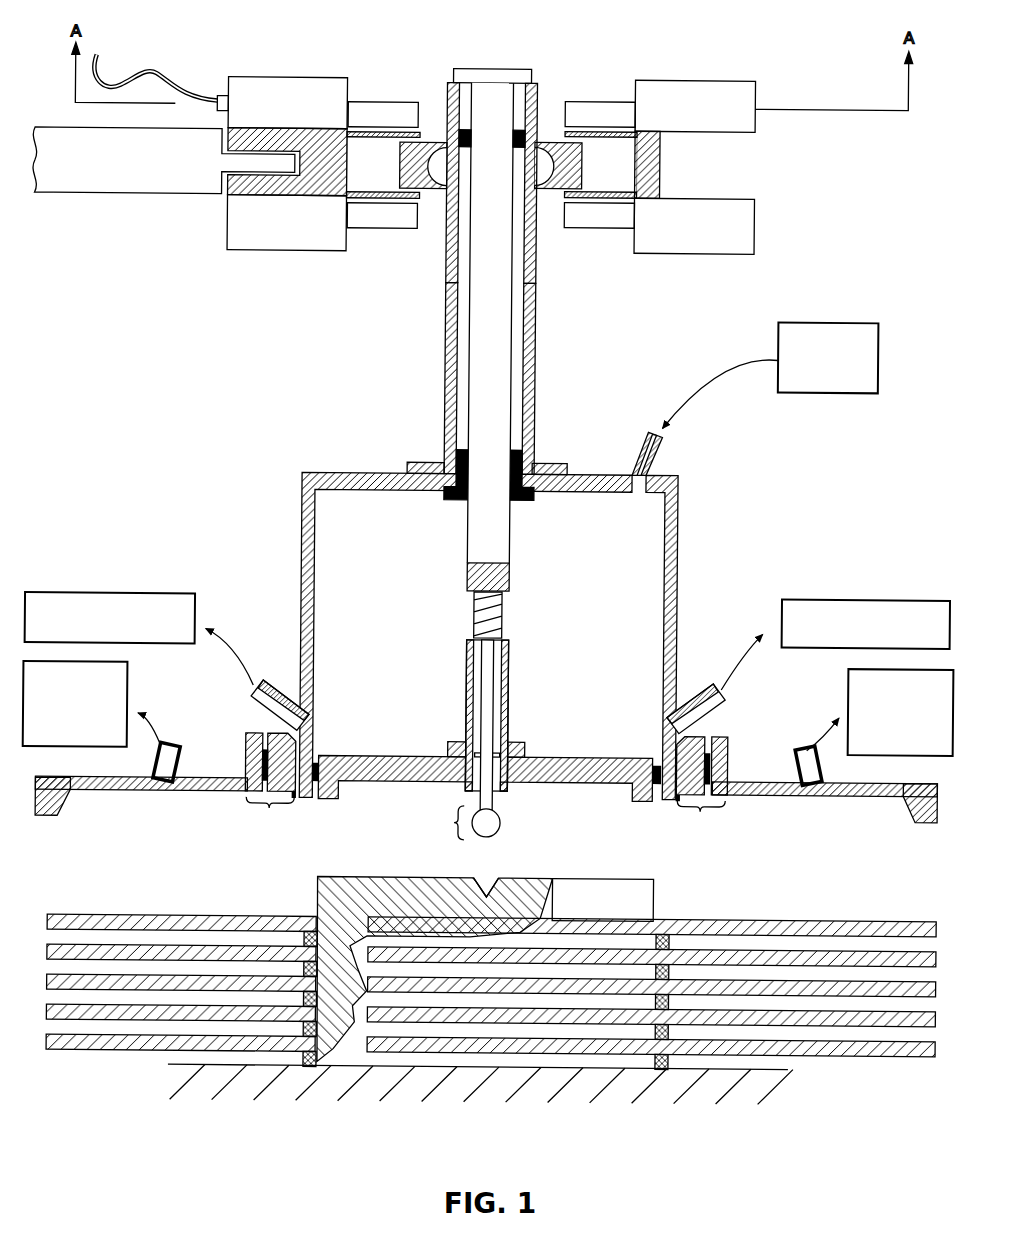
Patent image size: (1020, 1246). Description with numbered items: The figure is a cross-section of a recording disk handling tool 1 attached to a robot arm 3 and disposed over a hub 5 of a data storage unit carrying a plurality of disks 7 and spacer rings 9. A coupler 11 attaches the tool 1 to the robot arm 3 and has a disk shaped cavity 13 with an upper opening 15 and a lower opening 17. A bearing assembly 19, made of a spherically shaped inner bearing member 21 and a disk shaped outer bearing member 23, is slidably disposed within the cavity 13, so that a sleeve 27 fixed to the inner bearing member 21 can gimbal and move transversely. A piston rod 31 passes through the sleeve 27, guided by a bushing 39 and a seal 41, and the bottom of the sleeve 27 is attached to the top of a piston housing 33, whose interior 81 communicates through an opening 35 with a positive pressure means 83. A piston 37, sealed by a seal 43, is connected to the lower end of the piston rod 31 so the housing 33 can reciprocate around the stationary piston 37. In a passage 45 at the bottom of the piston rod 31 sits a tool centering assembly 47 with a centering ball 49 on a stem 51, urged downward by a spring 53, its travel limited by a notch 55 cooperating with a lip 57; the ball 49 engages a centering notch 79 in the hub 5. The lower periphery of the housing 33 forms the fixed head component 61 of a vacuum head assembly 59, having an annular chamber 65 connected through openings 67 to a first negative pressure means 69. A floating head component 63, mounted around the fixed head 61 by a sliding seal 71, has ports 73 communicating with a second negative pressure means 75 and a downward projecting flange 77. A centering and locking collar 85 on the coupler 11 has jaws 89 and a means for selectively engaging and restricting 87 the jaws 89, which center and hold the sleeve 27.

The recording disk handling tool 1 is at (185, 499).
The robot arm 3 is at (118, 198).
The hub 5 is at (336, 876).
The disks 7 is at (253, 918).
The spacer rings 9 is at (676, 937).
The coupler 11 is at (273, 139).
The cavity 13 is at (367, 174).
The upper opening 15 is at (440, 83).
The lower opening 17 is at (441, 192).
The bearing assembly 19 is at (423, 228).
The inner bearing member 21 is at (536, 143).
The outer bearing member 23 is at (423, 141).
The sleeve 27 is at (443, 380).
The piston rod 31 is at (491, 383).
The piston housing 33 is at (300, 478).
The opening 35 is at (639, 491).
The piston 37 is at (548, 758).
The bushing 39 is at (510, 132).
The seal 41 is at (466, 474).
The seal 43 is at (318, 762).
The passage 45 is at (505, 680).
The tool centering assembly 47 is at (458, 821).
The centering ball 49 is at (486, 837).
The stem 51 is at (481, 675).
The spring 53 is at (467, 606).
The notch 55 is at (466, 745).
The lip 57 is at (502, 791).
The vacuum head assembly 59 is at (485, 820).
The fixed head component 61 is at (280, 742).
The floating head component 63 is at (216, 780).
The annular chamber 65 is at (296, 800).
The openings 67 is at (264, 680).
The first negative pressure means 69 is at (110, 596).
The sliding seal 71 is at (248, 752).
The ports 73 is at (160, 764).
The second negative pressure means 75 is at (128, 691).
The flange 77 is at (69, 806).
The centering notch 79 is at (493, 893).
The interior 81 is at (587, 619).
The positive pressure means 83 is at (821, 320).
The centering and locking collar 85 is at (336, 79).
The means for selectively engaging and restricting 87 is at (298, 100).
The jaws 89 is at (379, 110).